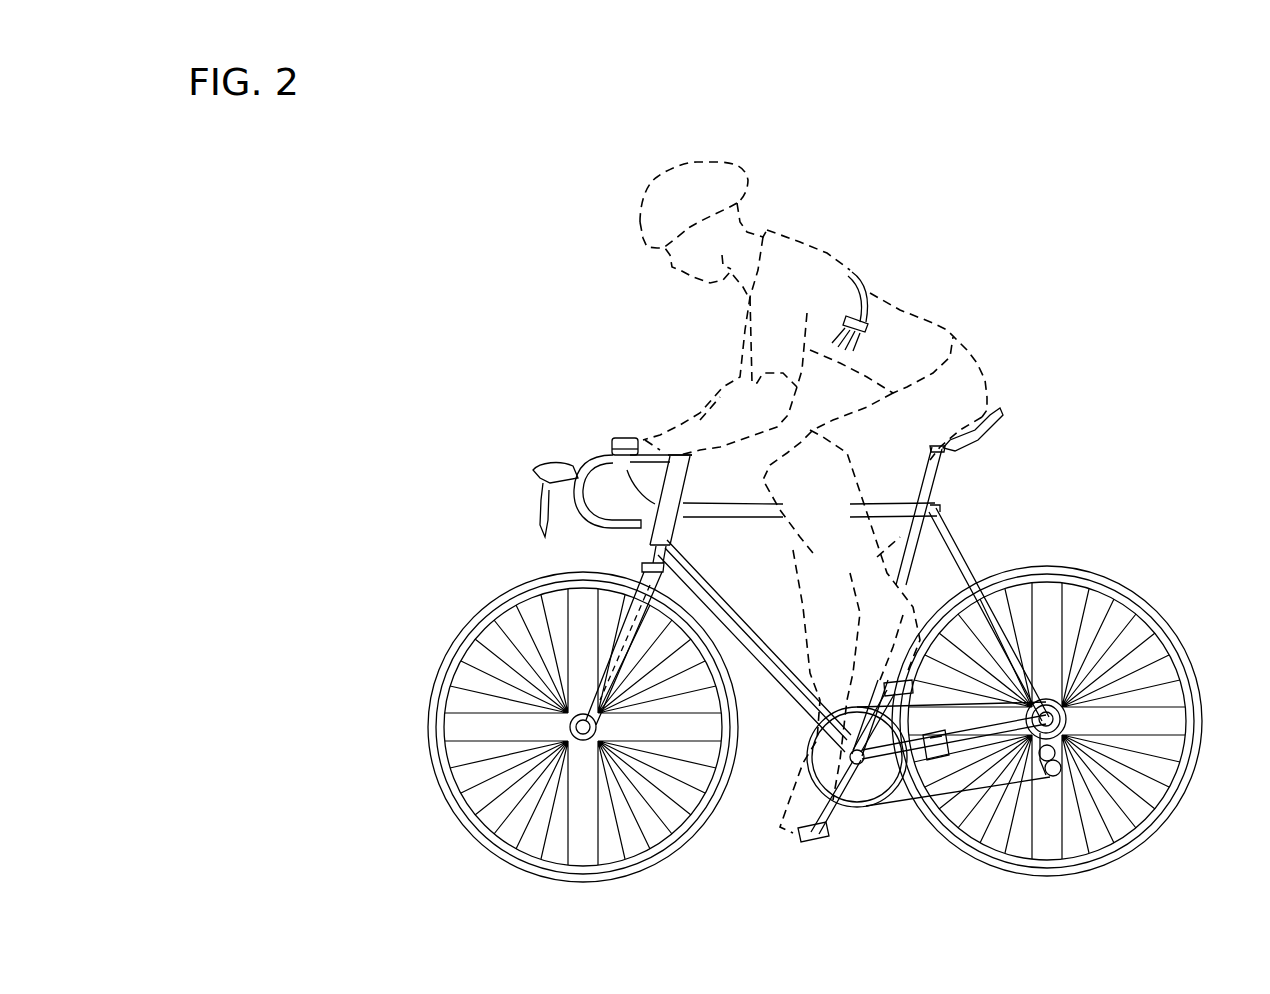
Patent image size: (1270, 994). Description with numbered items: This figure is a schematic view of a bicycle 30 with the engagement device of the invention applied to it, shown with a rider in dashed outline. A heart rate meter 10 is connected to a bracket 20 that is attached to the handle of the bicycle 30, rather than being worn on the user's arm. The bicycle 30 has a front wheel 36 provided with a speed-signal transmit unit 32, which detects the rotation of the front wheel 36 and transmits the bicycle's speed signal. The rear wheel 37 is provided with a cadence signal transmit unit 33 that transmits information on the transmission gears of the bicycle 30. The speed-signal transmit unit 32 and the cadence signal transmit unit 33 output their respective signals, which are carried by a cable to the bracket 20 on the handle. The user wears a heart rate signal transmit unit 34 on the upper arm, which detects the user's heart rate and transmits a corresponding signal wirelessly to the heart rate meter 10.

The heart rate meter 10 is at (623, 438).
The bracket 20 is at (608, 455).
The bicycle 30 is at (446, 347).
The speed-signal transmit unit 32 is at (645, 700).
The cadence signal transmit unit 33 is at (943, 763).
The heart rate signal transmit unit 34 is at (867, 327).
The front wheel 36 is at (428, 754).
The rear wheel 37 is at (1202, 745).